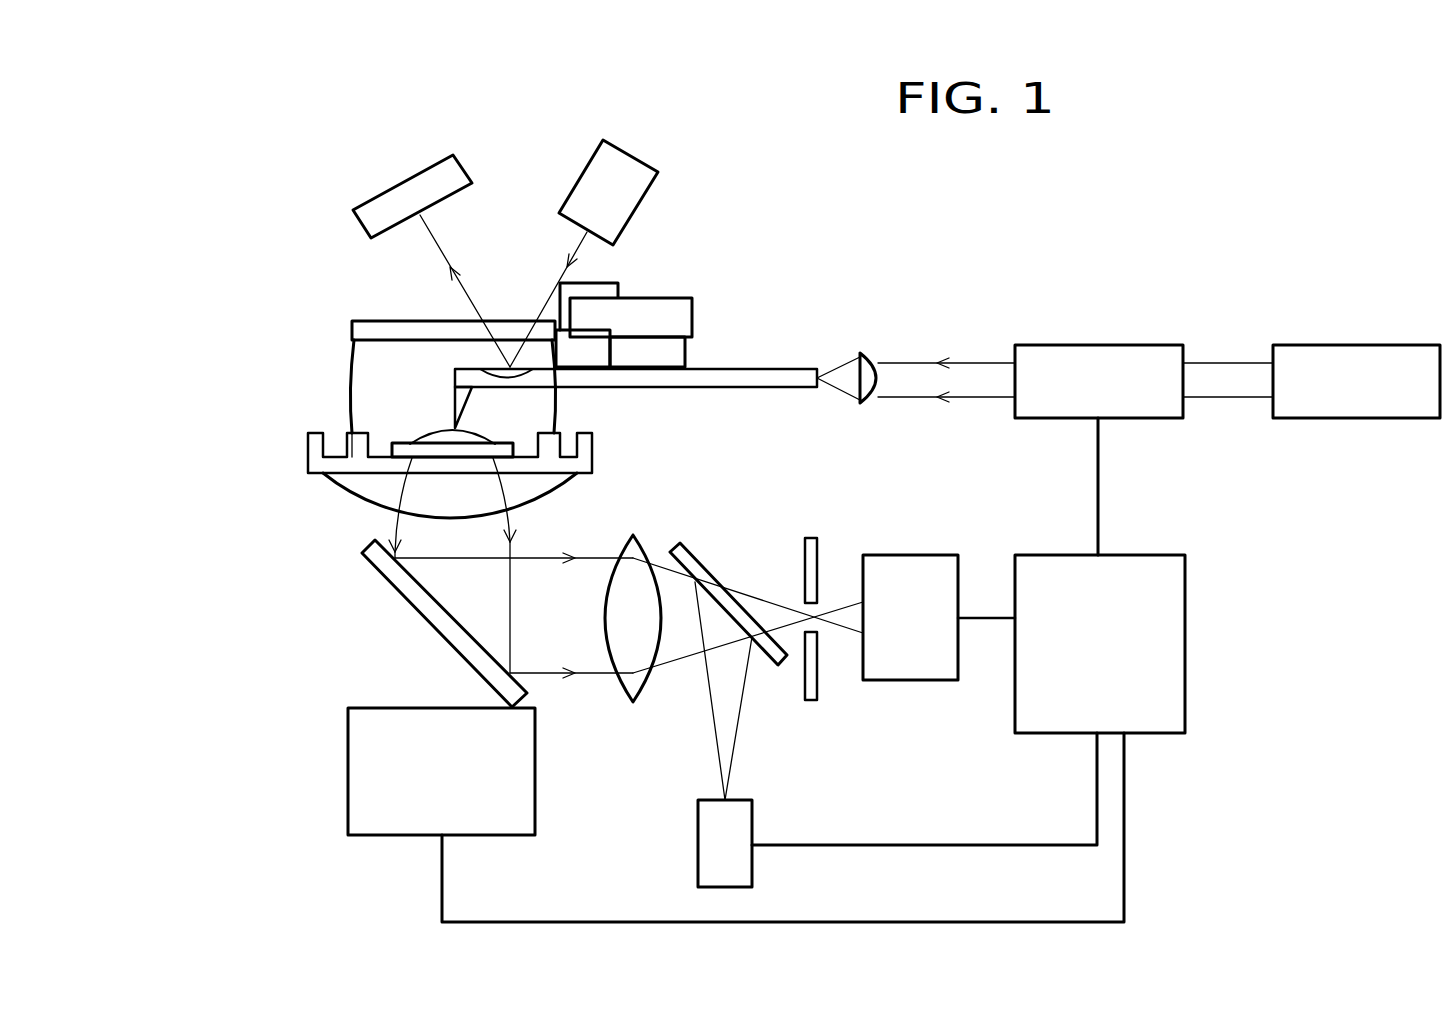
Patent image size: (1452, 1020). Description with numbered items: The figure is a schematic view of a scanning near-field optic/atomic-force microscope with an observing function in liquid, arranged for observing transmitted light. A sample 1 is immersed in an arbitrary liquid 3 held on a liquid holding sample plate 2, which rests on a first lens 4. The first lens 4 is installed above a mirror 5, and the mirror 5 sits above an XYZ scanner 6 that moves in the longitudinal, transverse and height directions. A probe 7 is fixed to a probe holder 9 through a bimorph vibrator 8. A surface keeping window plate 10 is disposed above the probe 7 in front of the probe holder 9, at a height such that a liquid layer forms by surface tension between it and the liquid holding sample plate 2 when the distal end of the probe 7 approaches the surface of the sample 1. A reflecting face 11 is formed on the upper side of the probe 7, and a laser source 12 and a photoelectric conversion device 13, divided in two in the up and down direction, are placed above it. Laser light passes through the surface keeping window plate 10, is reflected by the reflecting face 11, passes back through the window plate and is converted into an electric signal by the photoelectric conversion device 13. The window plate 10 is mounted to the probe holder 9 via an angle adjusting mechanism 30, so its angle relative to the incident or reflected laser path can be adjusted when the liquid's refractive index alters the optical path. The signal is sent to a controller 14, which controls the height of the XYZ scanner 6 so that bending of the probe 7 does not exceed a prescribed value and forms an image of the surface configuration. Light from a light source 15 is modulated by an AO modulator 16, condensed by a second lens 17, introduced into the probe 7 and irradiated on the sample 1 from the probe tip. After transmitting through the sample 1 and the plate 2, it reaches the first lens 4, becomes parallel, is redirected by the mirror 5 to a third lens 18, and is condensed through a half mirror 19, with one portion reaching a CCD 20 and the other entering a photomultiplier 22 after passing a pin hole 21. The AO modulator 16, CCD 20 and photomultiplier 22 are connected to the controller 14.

The sample 1 is at (465, 438).
The liquid holding sample plate 2 is at (323, 457).
The liquid 3 is at (373, 400).
The first lens 4 is at (370, 487).
The mirror 5 is at (395, 575).
The XYZ scanner 6 is at (363, 783).
The probe 7 is at (773, 368).
The bimorph vibrator 8 is at (682, 357).
The probe holder 9 is at (627, 310).
The surface keeping window plate 10 is at (373, 327).
The reflecting face 11 is at (493, 367).
The laser source 12 is at (640, 186).
The photoelectric conversion device 13 is at (415, 193).
The controller 14 is at (1173, 595).
The light source 15 is at (1347, 347).
The AO modulator 16 is at (1088, 352).
The second lens 17 is at (868, 352).
The third lens 18 is at (645, 552).
The half mirror 19 is at (687, 557).
The CCD 20 is at (752, 813).
The pin hole 21 is at (815, 567).
The photomultiplier 22 is at (898, 565).
The angle adjusting mechanism 30 is at (620, 290).